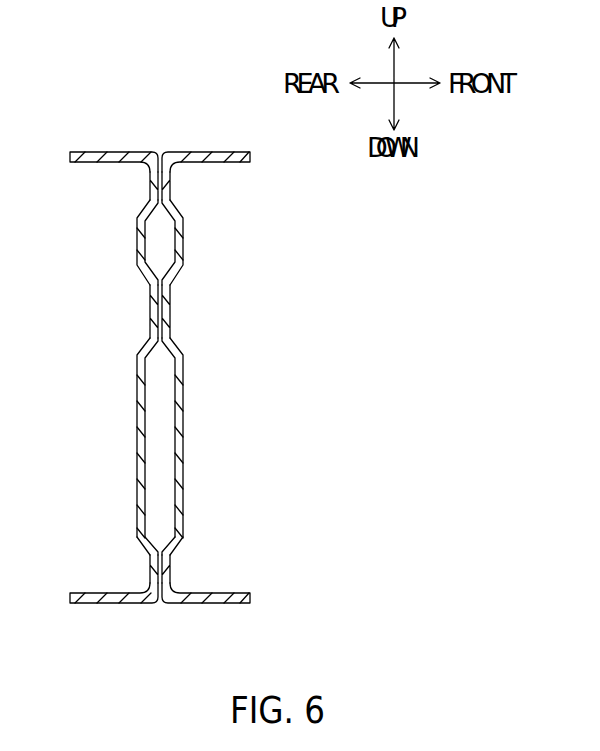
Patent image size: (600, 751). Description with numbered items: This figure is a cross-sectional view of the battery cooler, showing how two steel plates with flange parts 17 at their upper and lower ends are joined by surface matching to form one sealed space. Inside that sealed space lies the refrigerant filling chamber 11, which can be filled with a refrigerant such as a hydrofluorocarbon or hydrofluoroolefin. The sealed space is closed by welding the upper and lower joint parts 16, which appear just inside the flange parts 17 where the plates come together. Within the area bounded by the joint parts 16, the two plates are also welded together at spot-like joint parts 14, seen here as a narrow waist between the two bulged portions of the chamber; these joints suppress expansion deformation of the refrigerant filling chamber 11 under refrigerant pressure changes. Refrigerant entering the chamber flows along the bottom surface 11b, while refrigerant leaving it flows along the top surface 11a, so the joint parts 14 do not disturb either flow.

The refrigerant filling chamber 11 is at (137, 438).
The top surface 11a is at (172, 208).
The bottom surface 11b is at (170, 548).
The joint part 14 is at (150, 307).
The joint part 16 is at (150, 185).
The flange part 17 is at (202, 150).